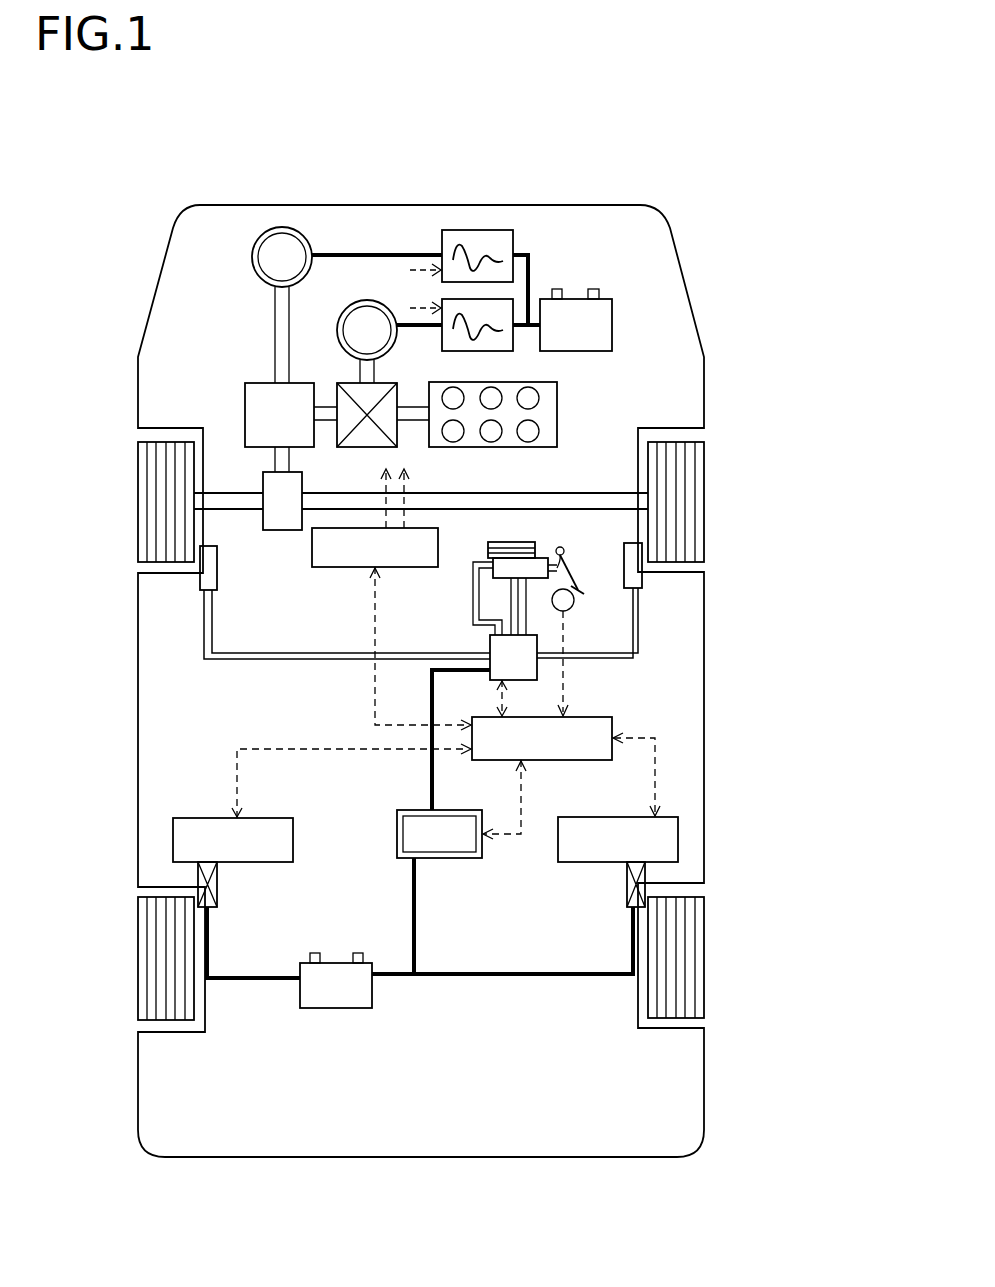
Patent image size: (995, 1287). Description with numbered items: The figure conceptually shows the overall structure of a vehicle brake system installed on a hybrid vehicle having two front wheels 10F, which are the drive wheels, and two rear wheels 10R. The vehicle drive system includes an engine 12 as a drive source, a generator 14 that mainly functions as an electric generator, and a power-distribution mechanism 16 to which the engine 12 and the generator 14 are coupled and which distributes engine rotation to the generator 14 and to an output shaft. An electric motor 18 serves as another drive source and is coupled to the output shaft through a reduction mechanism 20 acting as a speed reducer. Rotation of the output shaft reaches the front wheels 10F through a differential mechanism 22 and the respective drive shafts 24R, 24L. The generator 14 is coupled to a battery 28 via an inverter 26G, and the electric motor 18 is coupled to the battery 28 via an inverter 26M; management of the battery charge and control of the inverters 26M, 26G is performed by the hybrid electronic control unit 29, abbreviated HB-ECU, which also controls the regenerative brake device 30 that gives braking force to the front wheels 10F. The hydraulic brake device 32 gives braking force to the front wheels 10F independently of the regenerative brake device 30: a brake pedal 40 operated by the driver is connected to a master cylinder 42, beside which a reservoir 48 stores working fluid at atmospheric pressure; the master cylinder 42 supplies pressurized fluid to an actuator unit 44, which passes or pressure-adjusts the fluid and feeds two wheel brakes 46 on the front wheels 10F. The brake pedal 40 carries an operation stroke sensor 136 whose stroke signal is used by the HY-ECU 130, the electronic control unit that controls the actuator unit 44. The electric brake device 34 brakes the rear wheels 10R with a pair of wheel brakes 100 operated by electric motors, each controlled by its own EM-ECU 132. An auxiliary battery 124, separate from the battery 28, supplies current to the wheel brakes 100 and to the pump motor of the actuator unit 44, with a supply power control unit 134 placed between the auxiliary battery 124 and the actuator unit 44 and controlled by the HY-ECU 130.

The front wheel 10F is at (140, 452).
The rear wheel 10R is at (140, 1000).
The engine 12 is at (557, 412).
The generator 14 is at (368, 298).
The power-distribution mechanism 16 is at (333, 388).
The electric motor 18 is at (262, 236).
The reduction mechanism 20 is at (254, 390).
The differential mechanism 22 is at (302, 478).
The drive shaft 24L is at (232, 500).
The drive shaft 24R is at (457, 493).
The inverter 26M is at (490, 233).
The inverter 26G is at (485, 351).
The battery 28 is at (612, 313).
The hybrid electronic control unit 29 is at (350, 569).
The regenerative brake device 30 is at (336, 222).
The hydraulic brake device 32 is at (646, 623).
The electric brake device 34 is at (350, 903).
The brake pedal 40 is at (580, 586).
The master cylinder 42 is at (540, 568).
The actuator unit 44 is at (518, 672).
The wheel brake 46 is at (217, 568).
The reservoir 48 is at (498, 542).
The wheel brake 100 is at (217, 890).
The auxiliary battery 124 is at (304, 998).
The electronic control unit for the hydraulic brake device 130 is at (510, 761).
The electronic control unit for the electric brake device 132 is at (270, 818).
The supply power control unit 134 is at (465, 858).
The operation stroke sensor 136 is at (574, 605).